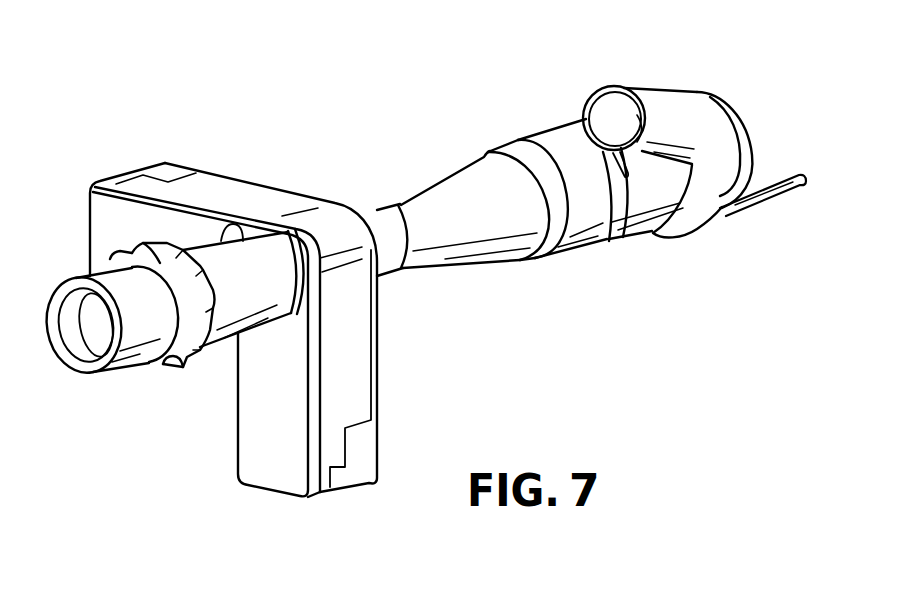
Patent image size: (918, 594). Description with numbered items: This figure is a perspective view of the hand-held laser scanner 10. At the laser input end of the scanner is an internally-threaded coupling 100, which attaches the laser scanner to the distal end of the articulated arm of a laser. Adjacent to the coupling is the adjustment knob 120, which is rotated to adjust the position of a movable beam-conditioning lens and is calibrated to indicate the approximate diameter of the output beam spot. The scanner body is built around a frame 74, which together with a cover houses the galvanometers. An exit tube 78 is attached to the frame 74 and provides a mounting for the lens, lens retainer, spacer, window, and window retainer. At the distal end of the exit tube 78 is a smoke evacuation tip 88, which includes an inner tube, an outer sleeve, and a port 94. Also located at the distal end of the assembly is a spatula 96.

The laser scanner 10 is at (421, 130).
The frame 74 is at (275, 480).
The exit tube 78 is at (494, 256).
The smoke evacuation tip 88 is at (637, 250).
The port 94 is at (657, 90).
The spatula 96 is at (794, 189).
The internally-threaded coupling 100 is at (78, 354).
The adjustment knob 120 is at (174, 374).